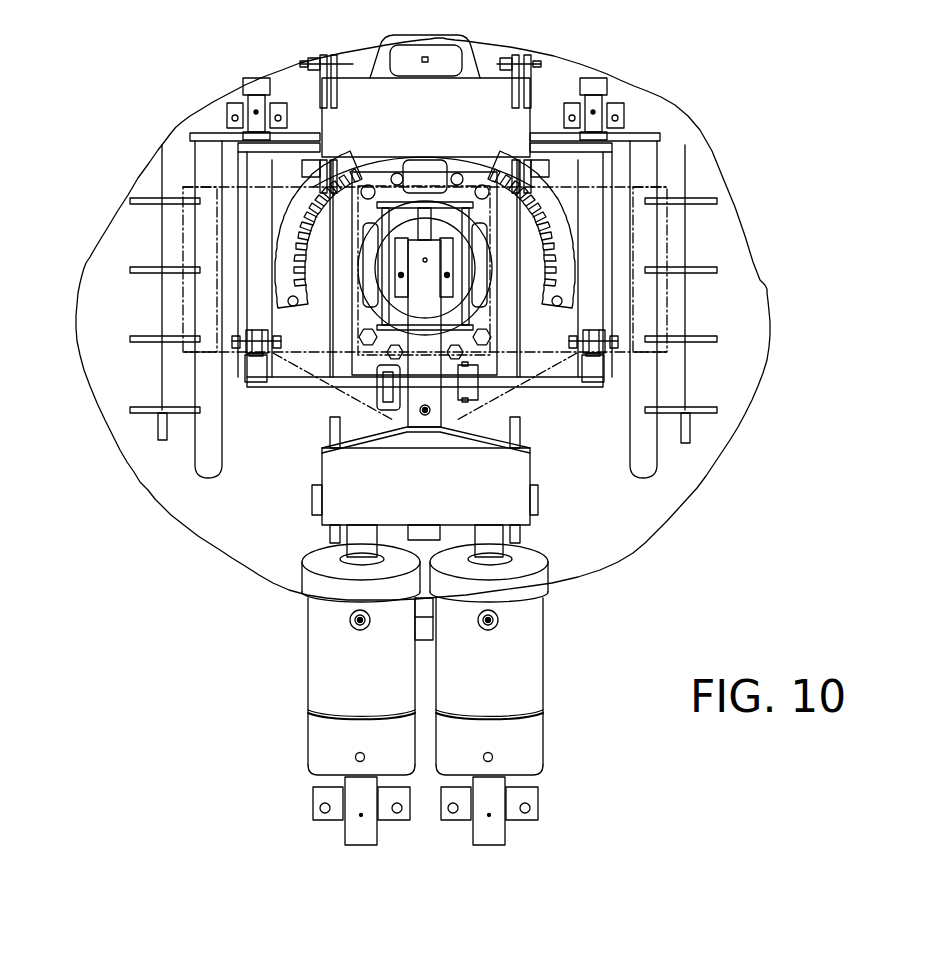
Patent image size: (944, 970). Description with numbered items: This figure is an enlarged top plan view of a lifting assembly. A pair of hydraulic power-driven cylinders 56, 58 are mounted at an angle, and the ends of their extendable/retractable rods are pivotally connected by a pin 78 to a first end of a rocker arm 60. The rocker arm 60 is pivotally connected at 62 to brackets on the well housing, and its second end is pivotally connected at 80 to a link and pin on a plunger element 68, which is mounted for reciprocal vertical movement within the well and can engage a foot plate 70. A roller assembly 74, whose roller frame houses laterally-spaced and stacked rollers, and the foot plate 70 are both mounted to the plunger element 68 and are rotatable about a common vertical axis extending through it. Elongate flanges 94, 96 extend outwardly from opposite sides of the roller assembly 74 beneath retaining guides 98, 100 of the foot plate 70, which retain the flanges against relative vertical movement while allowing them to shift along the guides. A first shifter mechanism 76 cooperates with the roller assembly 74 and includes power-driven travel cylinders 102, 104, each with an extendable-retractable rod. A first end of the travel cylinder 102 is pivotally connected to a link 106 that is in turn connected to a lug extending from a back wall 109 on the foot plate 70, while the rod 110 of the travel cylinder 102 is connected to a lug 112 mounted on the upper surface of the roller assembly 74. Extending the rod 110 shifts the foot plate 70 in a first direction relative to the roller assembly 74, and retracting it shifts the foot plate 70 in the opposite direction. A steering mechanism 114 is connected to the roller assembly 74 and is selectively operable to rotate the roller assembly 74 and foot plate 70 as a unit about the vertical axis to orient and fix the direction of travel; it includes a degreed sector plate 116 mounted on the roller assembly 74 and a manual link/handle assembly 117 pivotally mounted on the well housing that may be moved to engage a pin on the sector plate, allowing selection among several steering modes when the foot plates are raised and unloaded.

The hydraulic power-driven cylinder 56 is at (325, 668).
The hydraulic power-driven cylinder 58 is at (513, 660).
The rocker arm 60 is at (433, 417).
The pivotal connection 62 is at (397, 388).
The plunger element 68 is at (400, 223).
The foot plate 70 is at (178, 513).
The roller assembly 74 is at (302, 400).
The first shifter mechanism 76 is at (243, 197).
The pin 78 is at (312, 505).
The pivotal connection 80 is at (400, 284).
The elongate flange 94 is at (228, 365).
The elongate flange 96 is at (620, 368).
The retaining guide 98 is at (205, 438).
The retaining guide 100 is at (640, 450).
The travel cylinder 102 is at (250, 230).
The travel cylinder 104 is at (595, 178).
The link 106 is at (240, 92).
The back wall 109 is at (220, 133).
The rod 110 is at (258, 333).
The lug 112 is at (237, 345).
The steering mechanism 114 is at (363, 115).
The degreed sector plate 116 is at (297, 193).
The manual link/handle assembly 117 is at (435, 38).